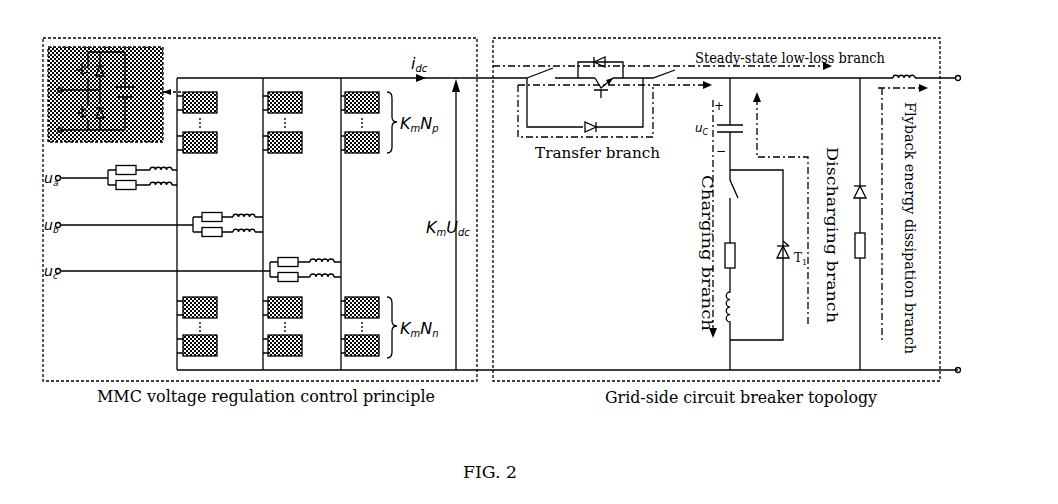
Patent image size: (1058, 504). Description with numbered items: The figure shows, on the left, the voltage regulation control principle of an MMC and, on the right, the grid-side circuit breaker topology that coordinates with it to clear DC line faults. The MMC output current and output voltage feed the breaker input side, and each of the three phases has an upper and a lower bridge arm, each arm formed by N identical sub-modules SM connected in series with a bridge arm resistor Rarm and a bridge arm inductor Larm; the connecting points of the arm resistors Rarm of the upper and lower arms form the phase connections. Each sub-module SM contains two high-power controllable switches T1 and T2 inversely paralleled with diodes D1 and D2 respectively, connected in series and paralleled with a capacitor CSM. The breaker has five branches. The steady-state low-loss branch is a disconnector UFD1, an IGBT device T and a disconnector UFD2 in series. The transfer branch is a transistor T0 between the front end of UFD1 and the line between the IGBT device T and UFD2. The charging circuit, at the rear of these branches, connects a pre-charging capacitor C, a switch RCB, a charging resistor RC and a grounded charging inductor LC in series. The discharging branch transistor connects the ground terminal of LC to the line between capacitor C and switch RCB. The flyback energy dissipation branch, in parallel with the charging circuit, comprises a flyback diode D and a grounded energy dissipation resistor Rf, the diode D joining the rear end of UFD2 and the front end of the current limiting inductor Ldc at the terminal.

The sub-module SM is at (278, 224).
The controllable electronic power switch T1 is at (69, 71).
The controllable electronic power switch T2 is at (69, 110).
The diode D1 is at (108, 71).
The diode D2 is at (108, 110).
The sub-module capacitor CSM is at (138, 91).
The bridge arm resistor Rarm is at (125, 169).
The bridge arm inductor Larm is at (160, 166).
The disconnector UFD1 is at (561, 63).
The disconnector UFD2 is at (768, 64).
The IGBT device T is at (610, 83).
The transistor T0 is at (585, 105).
The pre-charging capacitor C is at (736, 124).
The switch RCB is at (756, 255).
The charging resistor RC is at (739, 255).
The charging inductor LC is at (739, 319).
The flyback diode D is at (866, 155).
The energy dissipation resistor Rf is at (869, 301).
The current limiting inductor Ldc is at (924, 64).